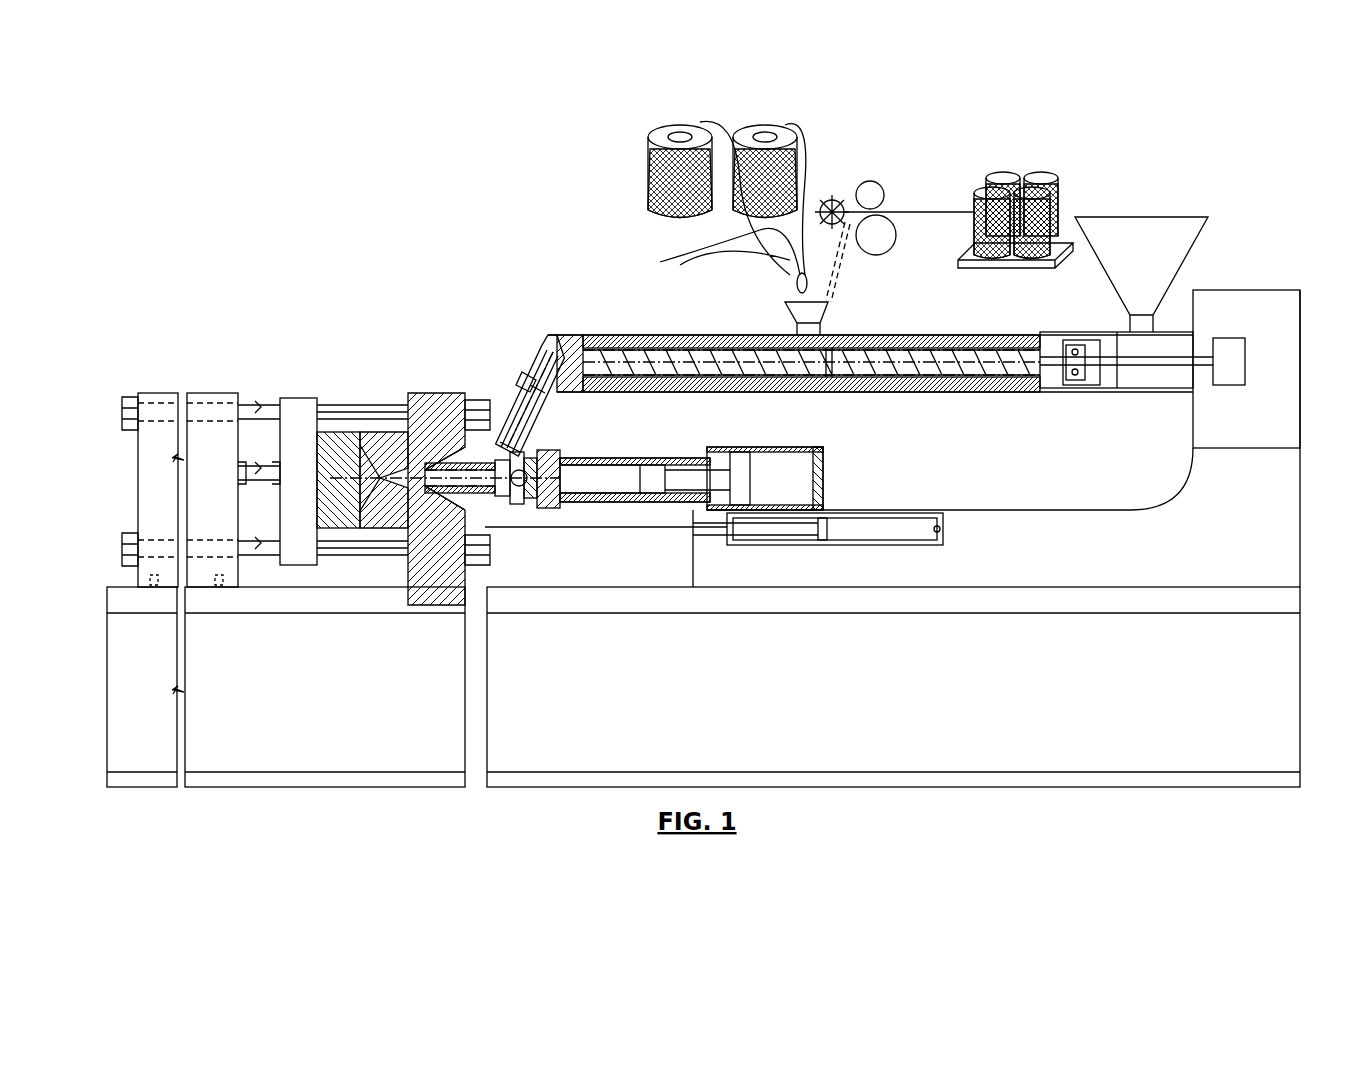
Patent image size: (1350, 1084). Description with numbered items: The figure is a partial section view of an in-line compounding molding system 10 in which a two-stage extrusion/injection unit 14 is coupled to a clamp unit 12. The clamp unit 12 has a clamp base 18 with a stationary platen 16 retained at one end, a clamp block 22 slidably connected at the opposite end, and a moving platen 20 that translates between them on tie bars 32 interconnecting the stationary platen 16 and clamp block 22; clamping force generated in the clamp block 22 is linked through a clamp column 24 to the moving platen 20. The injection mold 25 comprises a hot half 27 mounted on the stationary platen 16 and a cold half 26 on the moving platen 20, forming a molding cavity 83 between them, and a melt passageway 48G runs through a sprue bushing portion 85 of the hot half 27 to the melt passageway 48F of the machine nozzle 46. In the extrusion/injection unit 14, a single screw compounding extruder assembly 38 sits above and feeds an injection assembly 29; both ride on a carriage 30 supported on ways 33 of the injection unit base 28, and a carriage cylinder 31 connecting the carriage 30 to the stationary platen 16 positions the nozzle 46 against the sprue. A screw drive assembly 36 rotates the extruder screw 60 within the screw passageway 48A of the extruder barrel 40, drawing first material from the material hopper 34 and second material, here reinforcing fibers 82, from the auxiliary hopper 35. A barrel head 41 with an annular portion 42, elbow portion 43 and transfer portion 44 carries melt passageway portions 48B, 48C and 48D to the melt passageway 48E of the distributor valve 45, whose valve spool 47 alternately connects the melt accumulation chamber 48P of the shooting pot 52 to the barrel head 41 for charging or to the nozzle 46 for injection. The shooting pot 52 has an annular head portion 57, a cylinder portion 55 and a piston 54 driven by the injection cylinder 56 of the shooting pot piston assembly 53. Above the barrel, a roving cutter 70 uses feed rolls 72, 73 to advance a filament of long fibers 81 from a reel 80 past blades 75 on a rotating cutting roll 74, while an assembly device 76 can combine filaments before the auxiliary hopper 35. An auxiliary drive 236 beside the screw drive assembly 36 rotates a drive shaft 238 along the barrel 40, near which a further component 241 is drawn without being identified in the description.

The in-line compounding molding system 10 is at (285, 163).
The clamp unit 12 is at (341, 435).
The extrusion/injection unit 14 is at (848, 336).
The stationary platen 16 is at (424, 471).
The clamp base 18 is at (286, 687).
The moving platen 20 is at (300, 396).
The clamp block 22 is at (170, 392).
The clamp column 24 is at (255, 466).
The injection mold 25 is at (380, 432).
The cold half of the mold 26 is at (345, 430).
The hot half of the injection mold 27 is at (390, 440).
The injection unit base 28 is at (893, 687).
The injection assembly 29 is at (796, 452).
The carriage 30 is at (839, 517).
The carriage cylinder 31 is at (815, 546).
The tie bars 32 is at (255, 392).
The ways 33 is at (1280, 597).
The material hopper 34 is at (1195, 230).
The auxiliary hopper 35 is at (828, 320).
The screw drive assembly 36 is at (1268, 296).
The single screw compounding extruder assembly 38 is at (870, 357).
The extruder barrel 40 is at (965, 388).
The barrel head 41 is at (480, 330).
The annular portion 42 is at (574, 338).
The elbow portion 43 is at (544, 344).
The transfer portion 44 is at (518, 380).
The distributor valve 45 is at (516, 505).
The machine nozzle 46 is at (490, 500).
The valve spool 47 is at (530, 505).
The screw passageway 48A is at (665, 385).
The melt passageway portion 48B is at (576, 388).
The melt passageway portion 48C is at (540, 346).
The melt passageway portion 48D is at (545, 405).
The melt passageway 48E is at (568, 503).
The melt passageway 48F is at (468, 463).
The melt passageway 48G is at (418, 522).
The melt accumulation chamber 48P is at (615, 478).
The shooting pot 52 is at (635, 501).
The shooting pot piston assembly 53 is at (748, 448).
The piston 54 is at (742, 478).
The cylinder portion 55 is at (673, 499).
The injection cylinder 56 is at (825, 472).
The annular head portion 57 is at (549, 466).
The extruder screw 60 is at (940, 370).
The roving cutter 70 is at (823, 194).
The feed roll 72 is at (893, 242).
The feed roll 73 is at (878, 186).
The cutting roll 74 is at (828, 199).
The blades 75 is at (840, 198).
The assembly device 76 is at (795, 283).
The reel 80 is at (655, 133).
The filament of long fibers 81 is at (953, 165).
The reinforcing fibers 82 is at (840, 276).
The molding cavity 83 is at (365, 505).
The sprue bushing portion 85 is at (445, 478).
The auxiliary drive 236 is at (1230, 386).
The drive shaft 238 is at (1152, 366).
The coupling 241 is at (1073, 386).